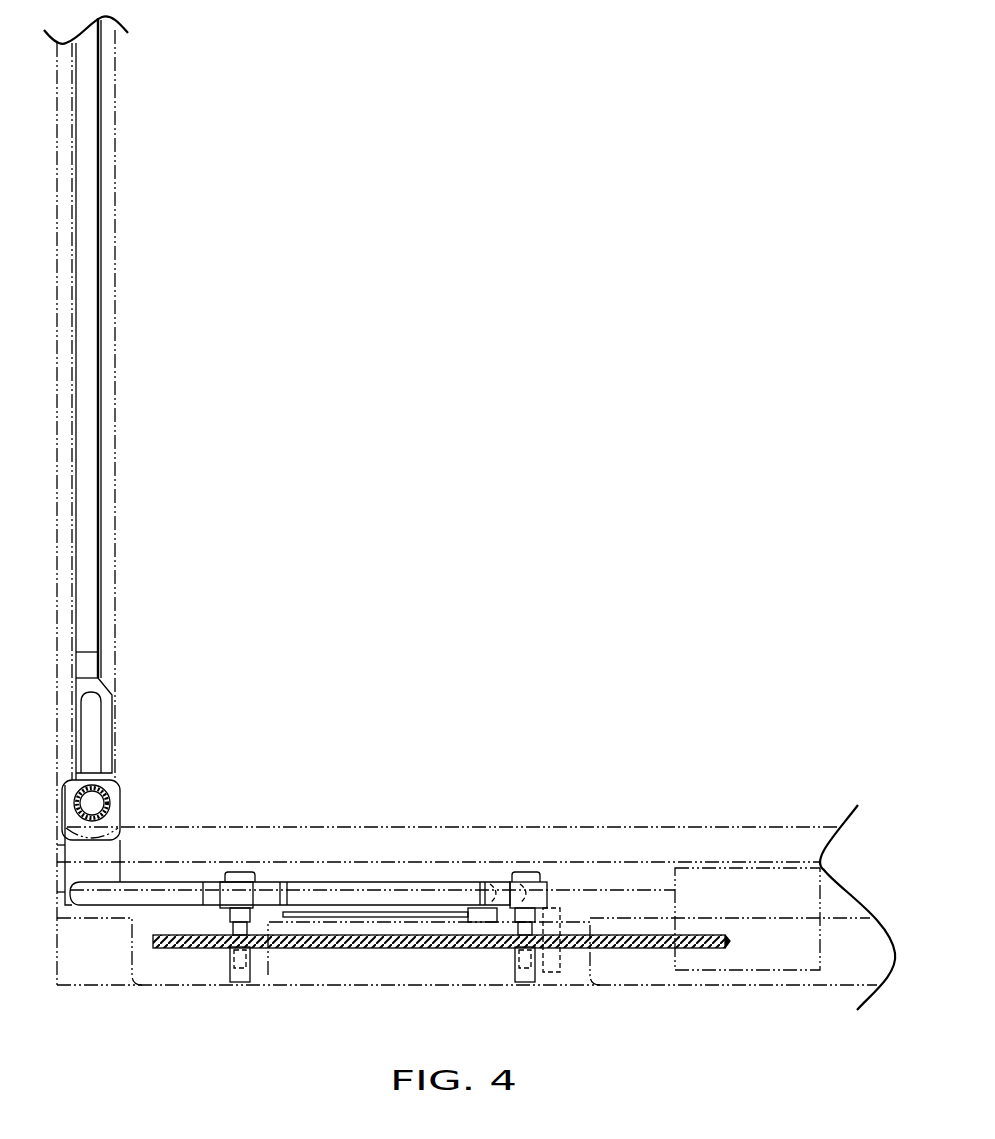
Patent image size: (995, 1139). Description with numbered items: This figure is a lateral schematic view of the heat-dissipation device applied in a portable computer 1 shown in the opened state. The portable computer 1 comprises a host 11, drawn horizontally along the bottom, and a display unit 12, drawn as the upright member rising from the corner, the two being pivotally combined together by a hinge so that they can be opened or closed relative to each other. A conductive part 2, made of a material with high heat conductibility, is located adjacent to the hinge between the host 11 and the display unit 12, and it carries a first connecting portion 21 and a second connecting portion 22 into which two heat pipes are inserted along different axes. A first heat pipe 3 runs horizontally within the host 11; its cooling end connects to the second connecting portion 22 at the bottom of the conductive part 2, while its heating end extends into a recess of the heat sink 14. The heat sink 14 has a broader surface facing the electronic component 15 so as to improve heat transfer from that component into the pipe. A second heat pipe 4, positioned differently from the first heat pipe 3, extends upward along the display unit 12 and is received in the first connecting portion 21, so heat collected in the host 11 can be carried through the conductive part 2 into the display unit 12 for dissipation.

The portable computer 1 is at (688, 800).
The host 11 is at (638, 972).
The display unit 12 is at (115, 193).
The heat sink 14 is at (547, 890).
The electronic component 15 is at (343, 913).
The conductive part 2 is at (110, 850).
The first connecting portion 21 is at (107, 792).
The second connecting portion 22 is at (73, 903).
The first heat pipe 3 is at (183, 885).
The second heat pipe 4 is at (95, 290).